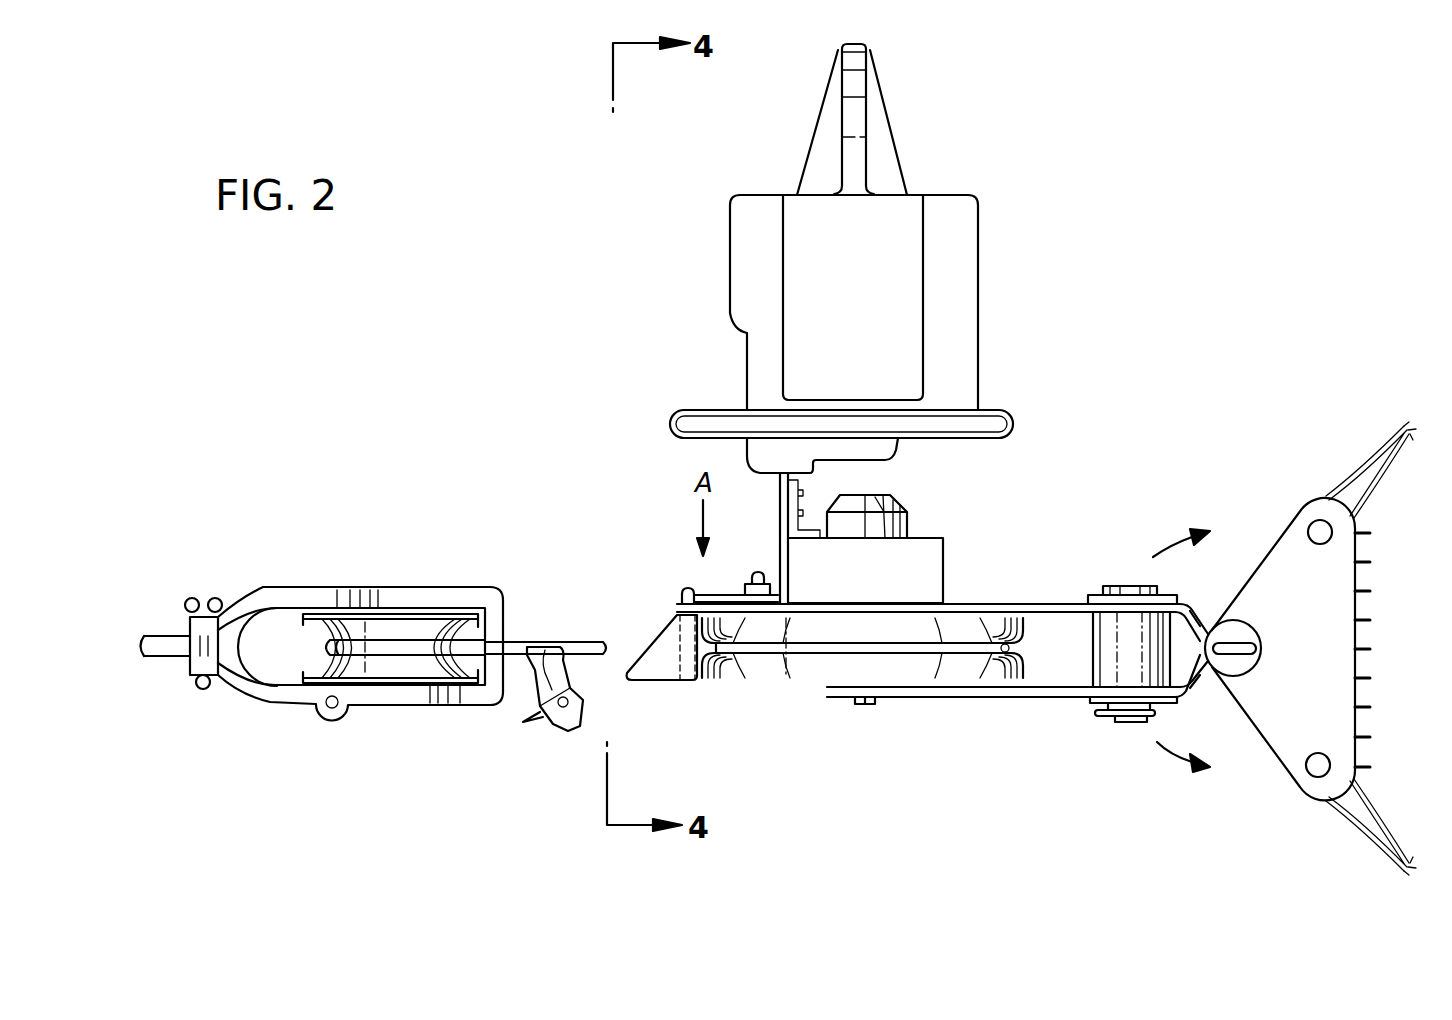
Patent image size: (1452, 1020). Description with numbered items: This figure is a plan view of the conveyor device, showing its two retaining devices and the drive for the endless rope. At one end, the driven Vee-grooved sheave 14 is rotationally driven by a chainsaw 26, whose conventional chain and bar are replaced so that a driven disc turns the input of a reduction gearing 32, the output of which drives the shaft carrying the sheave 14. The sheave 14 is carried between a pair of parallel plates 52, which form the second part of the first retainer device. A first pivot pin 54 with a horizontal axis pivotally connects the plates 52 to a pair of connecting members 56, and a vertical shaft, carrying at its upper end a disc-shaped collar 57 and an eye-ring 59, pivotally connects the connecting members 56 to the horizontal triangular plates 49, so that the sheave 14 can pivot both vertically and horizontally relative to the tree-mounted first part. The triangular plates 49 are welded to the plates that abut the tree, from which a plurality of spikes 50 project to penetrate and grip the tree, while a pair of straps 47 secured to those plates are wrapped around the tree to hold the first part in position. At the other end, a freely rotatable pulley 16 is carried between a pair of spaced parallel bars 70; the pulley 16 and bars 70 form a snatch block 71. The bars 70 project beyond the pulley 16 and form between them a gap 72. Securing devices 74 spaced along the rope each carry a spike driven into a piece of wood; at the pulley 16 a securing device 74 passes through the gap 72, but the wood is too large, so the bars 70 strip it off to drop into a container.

The driven Vee-grooved sheave 14 is at (762, 665).
The freely rotatable pulley 16 is at (403, 625).
The chainsaw 26 is at (1020, 283).
The reduction gearing 32 is at (923, 557).
The straps 47 is at (1396, 430).
The horizontal triangular plates 49 is at (1317, 697).
The spikes 50 is at (1362, 553).
The parallel plates 52 is at (1053, 604).
The first pivot pin 54 is at (1138, 593).
The connecting members 56 is at (1197, 607).
The disc-shaped collar 57 is at (1243, 633).
The eye-ring 59 is at (1233, 655).
The bars 70 is at (468, 595).
The snatch block 71 is at (232, 715).
The gap 72 is at (278, 635).
The securing devices 74 is at (552, 672).